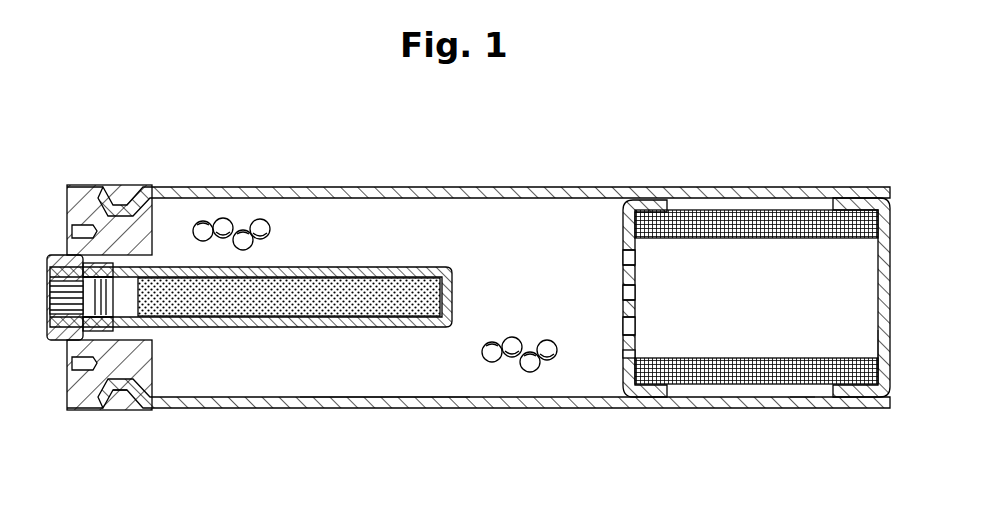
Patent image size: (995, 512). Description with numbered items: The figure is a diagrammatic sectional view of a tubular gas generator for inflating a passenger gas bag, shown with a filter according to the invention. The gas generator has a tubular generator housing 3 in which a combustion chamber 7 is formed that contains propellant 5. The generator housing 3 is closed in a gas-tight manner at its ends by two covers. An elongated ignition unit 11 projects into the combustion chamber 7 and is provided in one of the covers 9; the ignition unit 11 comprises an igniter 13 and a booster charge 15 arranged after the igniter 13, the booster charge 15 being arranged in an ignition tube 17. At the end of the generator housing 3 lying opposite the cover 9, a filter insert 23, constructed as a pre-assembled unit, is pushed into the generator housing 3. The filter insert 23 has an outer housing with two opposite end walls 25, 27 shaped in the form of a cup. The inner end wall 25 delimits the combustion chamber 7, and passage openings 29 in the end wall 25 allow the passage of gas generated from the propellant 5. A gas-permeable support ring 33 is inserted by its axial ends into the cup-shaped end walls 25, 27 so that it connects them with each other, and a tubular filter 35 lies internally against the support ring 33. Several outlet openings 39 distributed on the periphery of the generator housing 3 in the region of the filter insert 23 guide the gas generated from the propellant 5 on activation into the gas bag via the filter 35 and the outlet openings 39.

The generator housing 3 is at (437, 187).
The propellant 5 is at (510, 363).
The combustion chamber 7 is at (380, 385).
The cover 9 is at (98, 188).
The ignition unit 11 is at (66, 265).
The igniter 13 is at (128, 398).
The booster charge 15 is at (348, 287).
The ignition tube 17 is at (248, 330).
The filter insert 23 is at (838, 202).
The inner end wall 25 is at (623, 357).
The outer end wall 27 is at (880, 340).
The passage openings 29 is at (628, 262).
The support ring 33 is at (725, 198).
The filter 35 is at (727, 377).
The outlet openings 39 is at (805, 405).